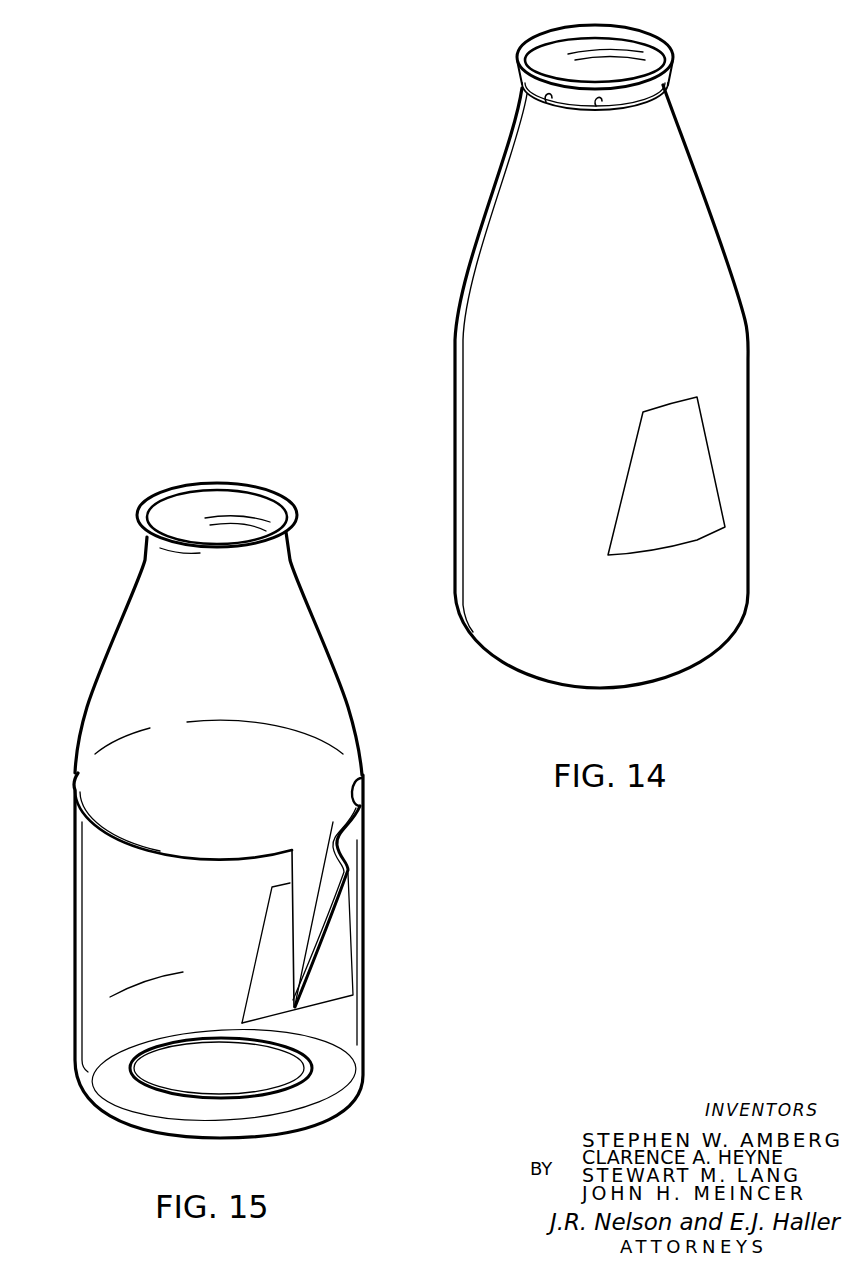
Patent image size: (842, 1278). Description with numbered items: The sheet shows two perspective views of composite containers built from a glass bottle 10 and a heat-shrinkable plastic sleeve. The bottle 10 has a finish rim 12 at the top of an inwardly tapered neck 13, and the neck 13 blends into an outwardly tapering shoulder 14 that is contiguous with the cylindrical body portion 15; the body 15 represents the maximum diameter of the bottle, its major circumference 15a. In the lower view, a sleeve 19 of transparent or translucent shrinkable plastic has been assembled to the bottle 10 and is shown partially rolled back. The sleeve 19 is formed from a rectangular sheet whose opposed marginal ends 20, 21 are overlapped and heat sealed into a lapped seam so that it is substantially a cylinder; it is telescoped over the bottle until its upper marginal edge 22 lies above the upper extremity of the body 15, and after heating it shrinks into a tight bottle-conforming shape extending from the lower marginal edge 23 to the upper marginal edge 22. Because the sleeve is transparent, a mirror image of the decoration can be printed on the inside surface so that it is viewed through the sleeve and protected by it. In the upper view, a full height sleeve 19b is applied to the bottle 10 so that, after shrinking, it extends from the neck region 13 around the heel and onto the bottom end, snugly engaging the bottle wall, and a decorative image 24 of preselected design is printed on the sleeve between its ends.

In FIG. 14, the glass bottle 10 is at (582, 71).
In FIG. 15, the glass bottle 10 is at (223, 669).
In FIG. 15, the finish rim 12 is at (294, 512).
In FIG. 14, the neck 13 is at (667, 77).
In FIG. 15, the neck 13 is at (288, 545).
In FIG. 15, the shoulder 14 is at (338, 660).
In FIG. 15, the cylindrical body portion 15 is at (303, 918).
In FIG. 15, the major circumference 15a is at (361, 773).
In FIG. 15, the sleeve 19 is at (126, 961).
In FIG. 14, the full height sleeve 19b is at (510, 401).
In FIG. 14, the marginal end 20 is at (460, 313).
In FIG. 15, the marginal end 20 is at (83, 947).
In FIG. 14, the marginal end 21 is at (552, 98).
In FIG. 15, the marginal end 21 is at (100, 822).
In FIG. 14, the upper marginal edge 22 is at (602, 101).
In FIG. 15, the upper marginal edge 22 is at (137, 847).
In FIG. 15, the lower marginal edge 23 is at (302, 1090).
In FIG. 14, the decorative image 24 is at (697, 540).